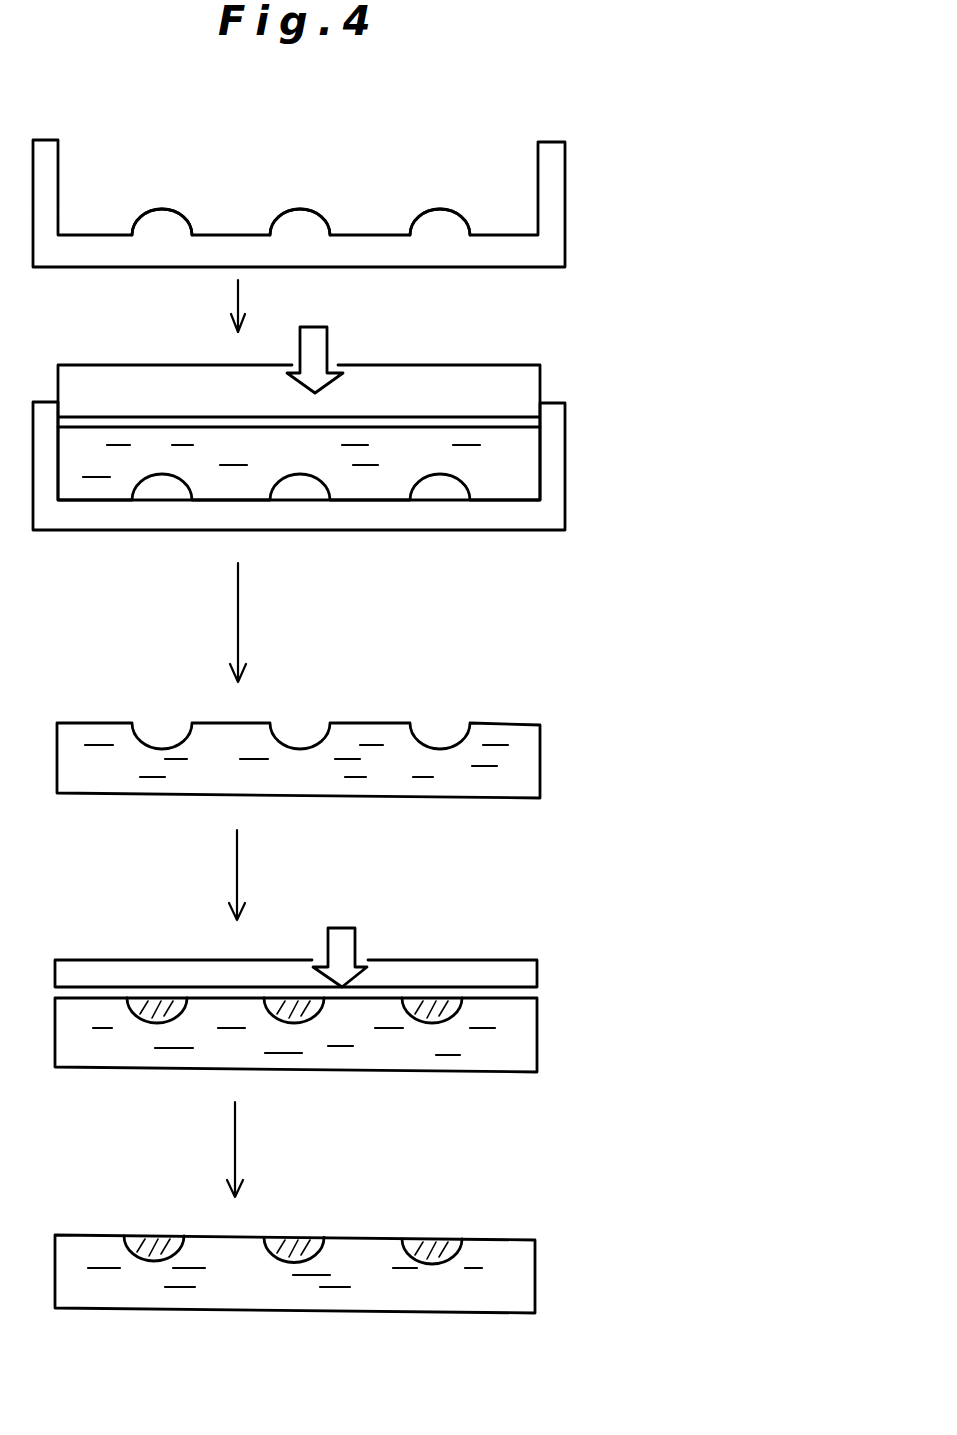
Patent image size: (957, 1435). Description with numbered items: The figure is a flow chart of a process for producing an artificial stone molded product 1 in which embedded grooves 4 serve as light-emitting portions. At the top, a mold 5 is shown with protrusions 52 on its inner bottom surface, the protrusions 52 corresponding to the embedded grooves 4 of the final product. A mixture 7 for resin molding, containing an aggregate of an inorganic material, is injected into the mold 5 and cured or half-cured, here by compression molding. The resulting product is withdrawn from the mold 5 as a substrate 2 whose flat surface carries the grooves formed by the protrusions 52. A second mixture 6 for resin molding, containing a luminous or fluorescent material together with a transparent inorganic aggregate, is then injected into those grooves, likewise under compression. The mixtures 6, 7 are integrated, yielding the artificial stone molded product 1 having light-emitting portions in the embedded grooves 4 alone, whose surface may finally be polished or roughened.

The artificial stone molded product 1 is at (328, 1235).
The substrate 2 is at (520, 758).
The embedded grooves 4 is at (157, 1237).
The mold 5 is at (557, 208).
The protrusions 52 is at (297, 208).
The mixture for resin molding containing luminous or fluorescent material 6 is at (288, 1001).
The mixture for resin molding containing an aggregate of an inorganic material 7 is at (413, 452).